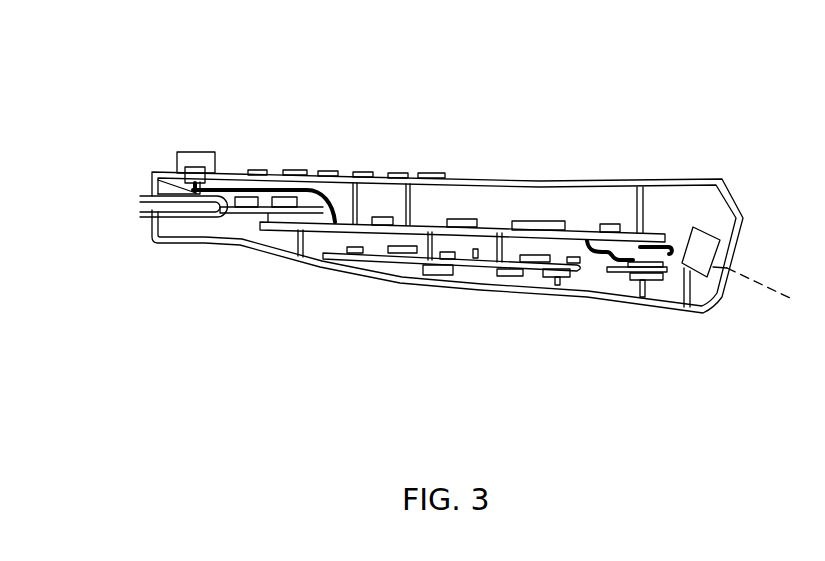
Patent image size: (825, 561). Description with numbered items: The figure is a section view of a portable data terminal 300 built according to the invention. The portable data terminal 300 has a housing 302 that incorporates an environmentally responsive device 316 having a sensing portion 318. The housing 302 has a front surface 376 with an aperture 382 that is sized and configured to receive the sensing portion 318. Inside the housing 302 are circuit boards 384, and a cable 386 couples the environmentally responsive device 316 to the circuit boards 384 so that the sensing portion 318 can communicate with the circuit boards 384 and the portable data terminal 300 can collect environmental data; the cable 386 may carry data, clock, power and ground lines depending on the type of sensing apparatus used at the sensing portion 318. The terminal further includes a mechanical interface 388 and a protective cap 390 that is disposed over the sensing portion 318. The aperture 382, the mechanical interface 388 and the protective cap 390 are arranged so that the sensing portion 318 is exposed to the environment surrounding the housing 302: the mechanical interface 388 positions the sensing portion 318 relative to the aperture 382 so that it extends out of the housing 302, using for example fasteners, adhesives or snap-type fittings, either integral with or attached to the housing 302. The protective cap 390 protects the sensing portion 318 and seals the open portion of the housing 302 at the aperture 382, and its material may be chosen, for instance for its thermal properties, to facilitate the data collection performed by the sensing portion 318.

The portable data terminal 300 is at (705, 70).
The housing 302 is at (442, 291).
The environmentally responsive device 316 is at (180, 140).
The sensing portion 318 is at (156, 177).
The front surface 376 is at (523, 175).
The aperture 382 is at (219, 186).
The circuit boards 384 is at (577, 232).
The cable 386 is at (244, 184).
The mechanical interface 388 is at (160, 197).
The protective cap 390 is at (193, 150).